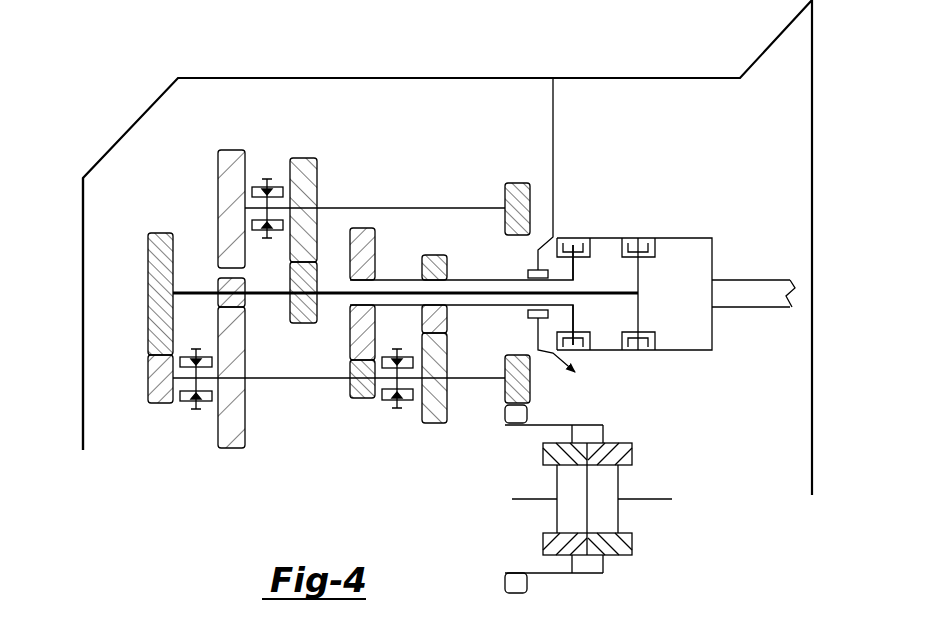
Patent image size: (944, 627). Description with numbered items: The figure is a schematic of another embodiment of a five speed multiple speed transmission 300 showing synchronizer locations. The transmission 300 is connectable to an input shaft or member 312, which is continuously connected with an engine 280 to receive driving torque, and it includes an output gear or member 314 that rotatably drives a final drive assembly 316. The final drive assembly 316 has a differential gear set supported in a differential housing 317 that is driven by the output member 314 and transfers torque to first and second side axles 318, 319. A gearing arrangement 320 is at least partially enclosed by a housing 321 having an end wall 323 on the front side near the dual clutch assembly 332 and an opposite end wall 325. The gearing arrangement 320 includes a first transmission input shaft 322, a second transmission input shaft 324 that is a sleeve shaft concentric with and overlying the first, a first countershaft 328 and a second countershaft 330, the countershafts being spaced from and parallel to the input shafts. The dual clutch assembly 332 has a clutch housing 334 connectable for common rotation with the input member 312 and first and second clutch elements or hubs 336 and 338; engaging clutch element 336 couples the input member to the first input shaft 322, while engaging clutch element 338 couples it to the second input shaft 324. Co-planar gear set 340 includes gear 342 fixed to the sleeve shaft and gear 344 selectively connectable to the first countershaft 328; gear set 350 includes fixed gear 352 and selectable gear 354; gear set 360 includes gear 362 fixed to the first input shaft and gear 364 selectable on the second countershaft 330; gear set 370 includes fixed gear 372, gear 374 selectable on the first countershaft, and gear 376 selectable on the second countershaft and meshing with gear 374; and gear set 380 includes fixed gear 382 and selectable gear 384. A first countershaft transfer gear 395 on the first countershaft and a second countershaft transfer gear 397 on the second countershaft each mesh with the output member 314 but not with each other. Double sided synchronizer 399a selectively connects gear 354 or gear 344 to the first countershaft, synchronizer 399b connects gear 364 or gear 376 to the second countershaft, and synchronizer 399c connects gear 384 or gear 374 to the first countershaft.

The engine 280 is at (48, 0).
The multiple speed transmission 300 is at (718, 62).
The input shaft or member 312 is at (773, 280).
The output gear or member 314 is at (527, 415).
The final drive assembly 316 is at (660, 473).
The differential housing 317 is at (603, 563).
The first side axle 318 is at (660, 500).
The second side axle 319 is at (518, 500).
The gearing arrangement 320 is at (122, 117).
The housing 321 is at (643, 78).
The first transmission input shaft or member 322 is at (467, 297).
The end wall 323 is at (555, 103).
The second transmission input shaft or member 324 is at (400, 280).
The end wall 325 is at (75, 186).
The first countershaft 328 is at (262, 378).
The second countershaft 330 is at (475, 208).
The dual clutch assembly 332 is at (677, 260).
The clutch housing 334 is at (715, 338).
The first clutch element or hub 336 is at (640, 313).
The second clutch element or hub 338 is at (575, 268).
The co-planar gear set 340 is at (450, 423).
The gear 342 is at (433, 255).
The gear 344 is at (448, 385).
The co-planar gear set 350 is at (360, 433).
The gear 352 is at (360, 228).
The gear 354 is at (350, 372).
The co-planar gear set 360 is at (293, 347).
The gear 362 is at (303, 327).
The gear 364 is at (318, 166).
The co-planar gear set 370 is at (232, 483).
The gear 372 is at (218, 288).
The gear 374 is at (244, 421).
The gear 376 is at (218, 155).
The co-planar gear set 380 is at (158, 440).
The gear 382 is at (161, 233).
The gear 384 is at (148, 396).
The first countershaft transfer gear 395 is at (530, 387).
The second countershaft transfer gear 397 is at (513, 183).
The synchronizer assembly 399a is at (405, 412).
The synchronizer assembly 399b is at (260, 180).
The synchronizer assembly 399c is at (200, 412).